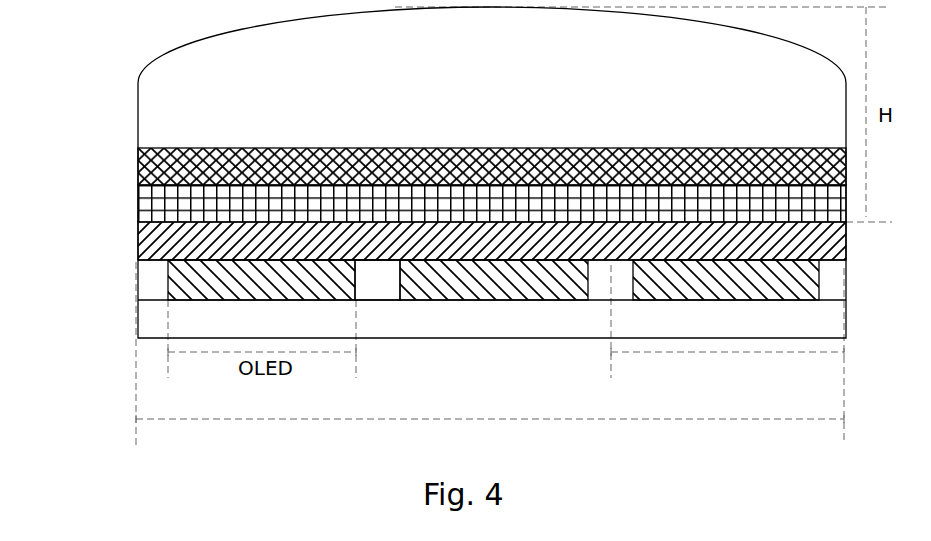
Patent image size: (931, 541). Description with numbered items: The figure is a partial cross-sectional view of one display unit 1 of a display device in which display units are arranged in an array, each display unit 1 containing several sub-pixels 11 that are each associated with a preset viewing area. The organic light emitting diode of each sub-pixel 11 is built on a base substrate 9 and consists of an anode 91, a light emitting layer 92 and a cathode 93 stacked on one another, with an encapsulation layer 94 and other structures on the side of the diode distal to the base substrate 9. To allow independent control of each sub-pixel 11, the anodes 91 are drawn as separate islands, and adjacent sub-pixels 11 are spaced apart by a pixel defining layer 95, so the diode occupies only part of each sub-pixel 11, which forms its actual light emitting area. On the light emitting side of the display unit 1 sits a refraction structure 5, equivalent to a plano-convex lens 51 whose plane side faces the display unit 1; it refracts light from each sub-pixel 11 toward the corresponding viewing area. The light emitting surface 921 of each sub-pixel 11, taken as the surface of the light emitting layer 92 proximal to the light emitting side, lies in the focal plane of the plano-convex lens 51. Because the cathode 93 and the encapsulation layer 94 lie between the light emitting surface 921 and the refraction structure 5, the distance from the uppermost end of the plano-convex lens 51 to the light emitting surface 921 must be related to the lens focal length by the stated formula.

The display unit 1 is at (490, 407).
The sub-pixel 11 is at (727, 366).
The refraction structure 5 is at (435, 77).
The plano-convex lens 51 is at (205, 95).
The base substrate 9 is at (158, 318).
The anode 91 is at (170, 281).
The light emitting layer 92 is at (440, 279).
The light emitting surface 921 is at (193, 225).
The cathode 93 is at (147, 208).
The encapsulation layer 94 is at (148, 158).
The pixel defining layer 95 is at (385, 272).